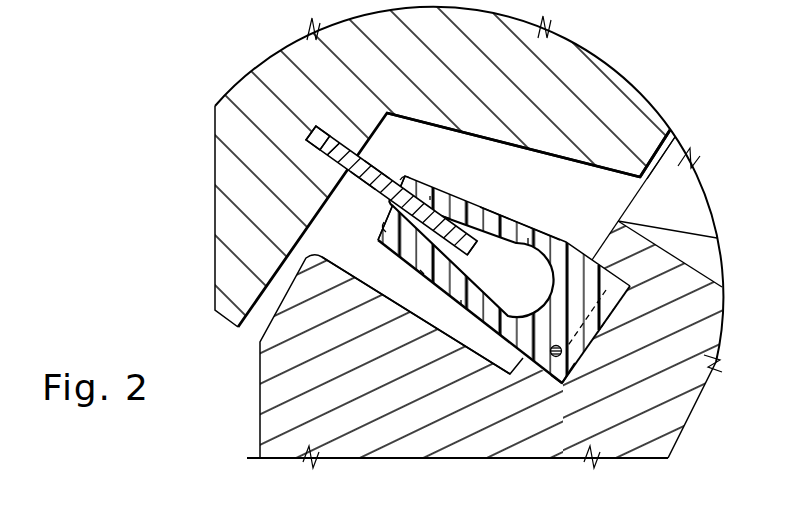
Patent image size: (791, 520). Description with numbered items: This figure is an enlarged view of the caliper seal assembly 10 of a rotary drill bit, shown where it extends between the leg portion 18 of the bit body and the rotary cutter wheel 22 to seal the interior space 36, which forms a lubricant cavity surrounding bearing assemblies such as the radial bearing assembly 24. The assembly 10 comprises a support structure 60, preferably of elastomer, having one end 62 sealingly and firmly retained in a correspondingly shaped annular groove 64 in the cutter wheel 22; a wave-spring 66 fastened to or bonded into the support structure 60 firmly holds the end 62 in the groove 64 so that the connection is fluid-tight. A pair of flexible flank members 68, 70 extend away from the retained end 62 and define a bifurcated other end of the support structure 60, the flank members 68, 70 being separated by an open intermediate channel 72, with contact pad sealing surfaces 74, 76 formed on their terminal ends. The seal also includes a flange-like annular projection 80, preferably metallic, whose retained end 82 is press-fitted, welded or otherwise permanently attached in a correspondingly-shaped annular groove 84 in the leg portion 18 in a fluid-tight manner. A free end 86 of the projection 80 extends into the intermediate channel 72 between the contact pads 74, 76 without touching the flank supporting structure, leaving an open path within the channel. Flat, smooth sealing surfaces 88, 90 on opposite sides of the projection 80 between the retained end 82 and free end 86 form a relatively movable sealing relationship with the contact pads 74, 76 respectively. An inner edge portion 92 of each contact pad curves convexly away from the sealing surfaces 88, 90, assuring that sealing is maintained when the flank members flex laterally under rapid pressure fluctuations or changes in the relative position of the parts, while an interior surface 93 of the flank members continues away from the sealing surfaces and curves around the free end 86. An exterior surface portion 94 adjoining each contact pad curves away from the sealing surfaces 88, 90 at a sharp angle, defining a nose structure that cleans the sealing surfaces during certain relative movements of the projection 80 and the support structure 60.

The caliper seal assembly 10 is at (580, 182).
The leg portion 18 is at (418, 54).
The cutter wheel 22 is at (383, 411).
The radial bearing assembly 24 is at (688, 211).
The interior space 36 is at (548, 179).
The support structure 60 is at (582, 240).
The end 62 is at (607, 308).
The annular groove 64 is at (564, 378).
The wave-spring 66 is at (562, 353).
The flexible flank member 68 is at (515, 221).
The flexible flank member 70 is at (425, 283).
The intermediate channel 72 is at (529, 299).
The contact pad sealing surface 74 is at (414, 190).
The contact pad sealing surface 76 is at (388, 225).
The flange-like annular projection 80 is at (337, 147).
The retained end 82 is at (310, 130).
The annular groove 84 is at (328, 157).
The free end 86 is at (473, 247).
The sealing surface 88 is at (377, 167).
The sealing surface 90 is at (364, 185).
The inner edge portion 92 is at (430, 200).
The interior surface 93 is at (532, 247).
The exterior surface portion 94 is at (401, 176).